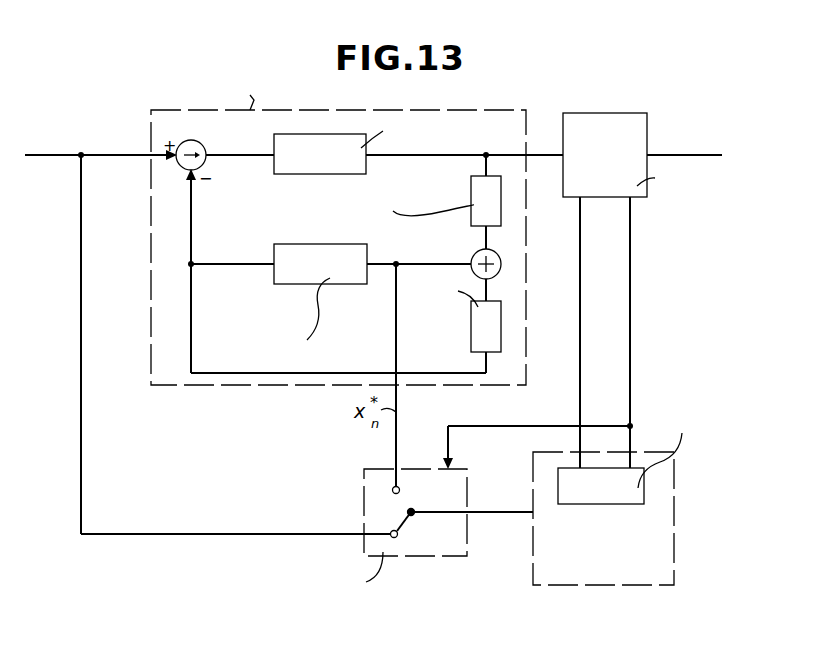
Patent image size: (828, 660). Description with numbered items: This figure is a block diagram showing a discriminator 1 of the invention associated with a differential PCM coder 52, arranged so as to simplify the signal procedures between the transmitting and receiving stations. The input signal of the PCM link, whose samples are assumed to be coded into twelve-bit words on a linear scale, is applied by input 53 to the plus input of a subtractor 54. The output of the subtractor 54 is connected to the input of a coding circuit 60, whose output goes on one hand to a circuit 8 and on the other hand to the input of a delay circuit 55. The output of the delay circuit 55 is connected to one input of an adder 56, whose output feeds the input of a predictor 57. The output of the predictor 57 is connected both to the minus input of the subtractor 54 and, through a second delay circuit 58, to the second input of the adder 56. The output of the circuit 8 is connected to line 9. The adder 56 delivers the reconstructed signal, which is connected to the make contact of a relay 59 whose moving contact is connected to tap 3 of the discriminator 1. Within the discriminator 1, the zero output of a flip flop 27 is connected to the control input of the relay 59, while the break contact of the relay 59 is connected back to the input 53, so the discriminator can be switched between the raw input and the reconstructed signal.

The differential PCM coder 52 is at (151, 292).
The input 53 is at (109, 151).
The subtractor 54 is at (199, 146).
The coding circuit 60 is at (305, 176).
The delay circuit 55 is at (471, 197).
The adder 56 is at (472, 254).
The predictor 57 is at (308, 286).
The delay circuit 58 is at (471, 336).
The circuit 8 is at (597, 118).
The line 9 is at (688, 155).
The relay 59 is at (364, 497).
The tap 3 is at (501, 511).
The discriminator 1 is at (533, 564).
The flip flop 27 is at (620, 505).